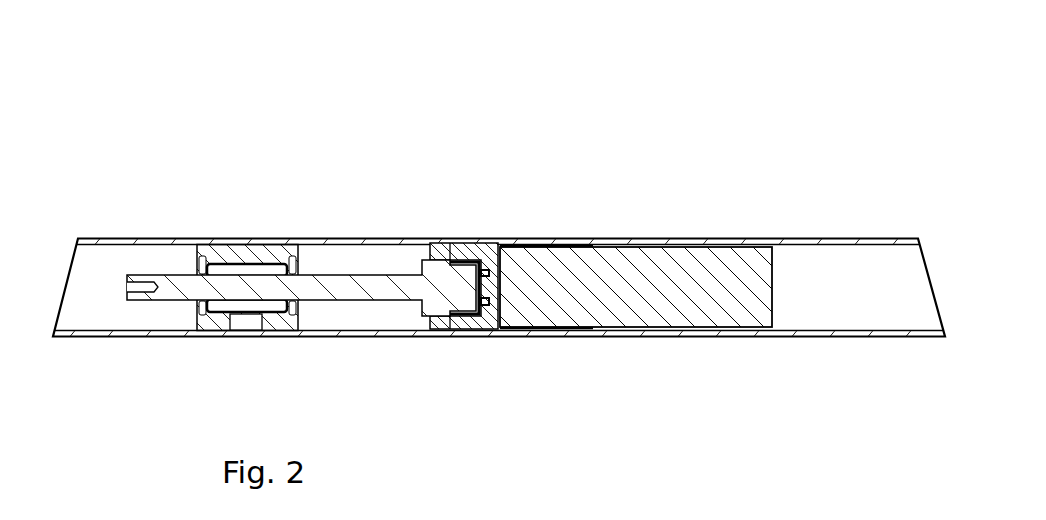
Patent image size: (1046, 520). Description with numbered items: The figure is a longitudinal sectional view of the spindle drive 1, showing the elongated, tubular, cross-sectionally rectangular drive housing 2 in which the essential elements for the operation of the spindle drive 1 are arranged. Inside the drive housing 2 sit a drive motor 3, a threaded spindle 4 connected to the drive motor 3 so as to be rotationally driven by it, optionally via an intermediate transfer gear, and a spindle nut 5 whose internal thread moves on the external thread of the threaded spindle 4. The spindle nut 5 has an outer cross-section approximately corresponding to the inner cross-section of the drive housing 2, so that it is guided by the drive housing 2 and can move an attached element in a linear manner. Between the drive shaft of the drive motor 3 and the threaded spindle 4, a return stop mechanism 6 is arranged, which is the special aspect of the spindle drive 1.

The spindle drive 1 is at (462, 188).
The drive housing 2 is at (742, 238).
The drive motor 3 is at (611, 282).
The threaded spindle 4 is at (346, 282).
The spindle nut 5 is at (270, 263).
The return stop mechanism 6 is at (462, 328).